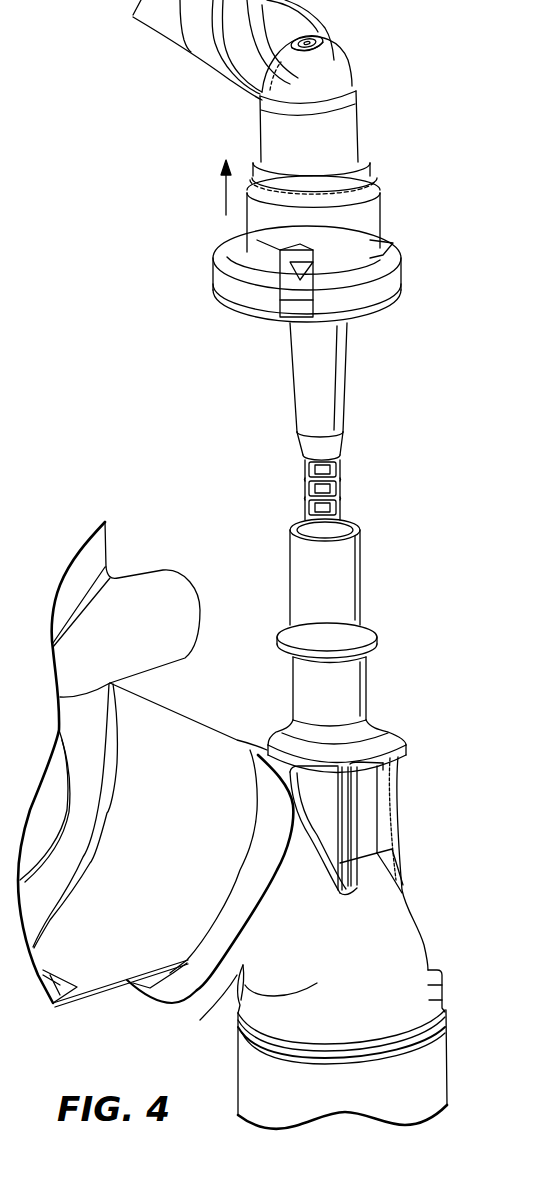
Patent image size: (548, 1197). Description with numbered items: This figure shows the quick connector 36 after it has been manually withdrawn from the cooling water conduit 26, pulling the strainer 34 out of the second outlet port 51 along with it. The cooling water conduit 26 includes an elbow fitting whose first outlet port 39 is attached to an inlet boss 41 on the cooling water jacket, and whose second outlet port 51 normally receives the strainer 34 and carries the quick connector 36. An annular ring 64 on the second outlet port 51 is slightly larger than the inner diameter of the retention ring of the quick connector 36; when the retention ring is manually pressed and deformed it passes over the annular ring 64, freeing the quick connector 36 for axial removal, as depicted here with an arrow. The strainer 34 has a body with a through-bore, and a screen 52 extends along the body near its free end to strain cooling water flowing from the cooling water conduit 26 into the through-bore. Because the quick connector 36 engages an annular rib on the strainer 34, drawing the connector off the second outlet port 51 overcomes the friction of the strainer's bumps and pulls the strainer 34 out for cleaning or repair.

The quick connector 36 is at (398, 188).
The strainer 34 is at (282, 392).
The screen 52 is at (300, 492).
The second outlet port 51 is at (348, 588).
The annular ring 64 is at (378, 639).
The cooling water conduit 26 is at (418, 851).
The inlet boss 41 is at (165, 854).
The first outlet port 39 is at (241, 972).